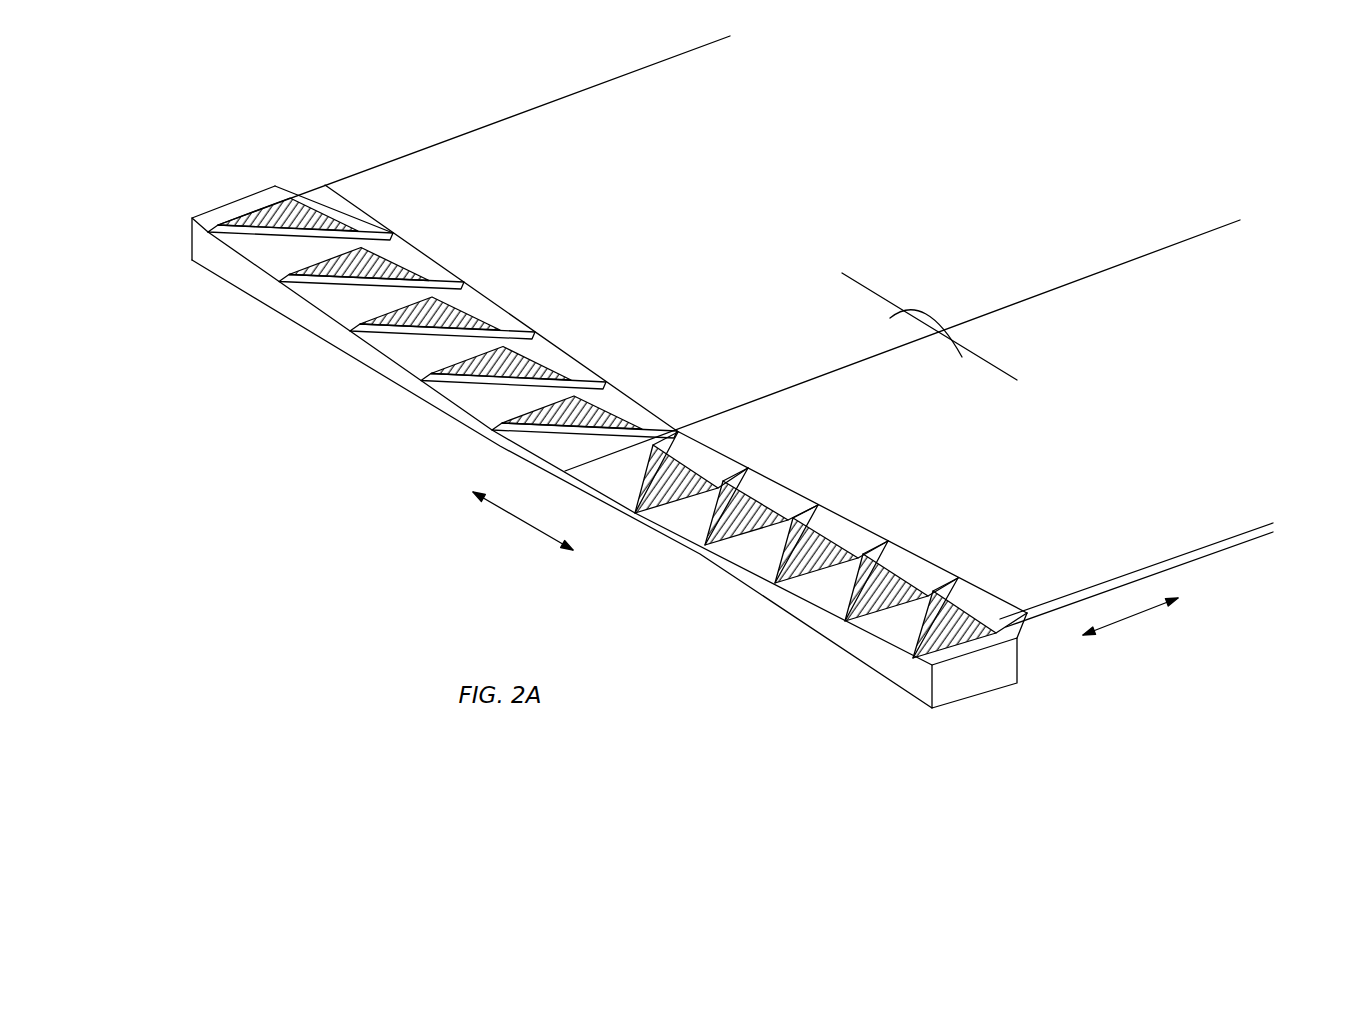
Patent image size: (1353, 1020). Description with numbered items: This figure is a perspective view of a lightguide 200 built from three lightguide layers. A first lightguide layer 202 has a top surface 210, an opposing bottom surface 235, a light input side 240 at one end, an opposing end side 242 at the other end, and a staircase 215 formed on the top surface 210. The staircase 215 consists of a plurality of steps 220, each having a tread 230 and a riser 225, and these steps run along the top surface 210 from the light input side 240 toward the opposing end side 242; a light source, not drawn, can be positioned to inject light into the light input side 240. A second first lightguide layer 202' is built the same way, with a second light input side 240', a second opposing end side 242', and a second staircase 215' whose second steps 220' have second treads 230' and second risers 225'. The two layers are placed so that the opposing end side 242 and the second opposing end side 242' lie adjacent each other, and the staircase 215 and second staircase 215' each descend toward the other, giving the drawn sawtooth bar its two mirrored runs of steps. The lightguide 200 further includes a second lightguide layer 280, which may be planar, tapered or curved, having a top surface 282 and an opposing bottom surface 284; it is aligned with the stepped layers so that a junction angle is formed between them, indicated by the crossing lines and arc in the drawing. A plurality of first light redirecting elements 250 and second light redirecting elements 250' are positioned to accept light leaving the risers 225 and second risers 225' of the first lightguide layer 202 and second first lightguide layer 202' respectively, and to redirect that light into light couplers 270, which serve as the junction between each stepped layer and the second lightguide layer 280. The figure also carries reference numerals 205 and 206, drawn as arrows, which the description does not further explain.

The lightguide 200 is at (395, 497).
The first lightguide layer 202 is at (560, 447).
The second first lightguide layer 202' is at (835, 678).
The lateral direction 205 is at (517, 520).
The substrate direction 206 is at (1132, 618).
The top surface 210 is at (233, 210).
The staircase 215 is at (418, 439).
The second staircase 215' is at (706, 608).
The steps 220 is at (328, 377).
The second steps 220' is at (624, 567).
The risers 225 is at (430, 313).
The second risers 225' is at (815, 551).
The treads 230 is at (442, 331).
The second treads 230' is at (831, 551).
The opposing bottom surface 235 is at (207, 272).
The light input side 240 is at (190, 223).
The second light input side 240' is at (979, 683).
The opposing end side 242 is at (509, 329).
The second opposing end side 242' is at (745, 448).
The first light redirecting elements 250 is at (397, 396).
The second light redirecting elements 250' is at (799, 474).
The light couplers 270 is at (920, 567).
The second lightguide layer 280 is at (1208, 560).
The top surface 282 is at (468, 147).
The opposing bottom surface 284 is at (1235, 547).